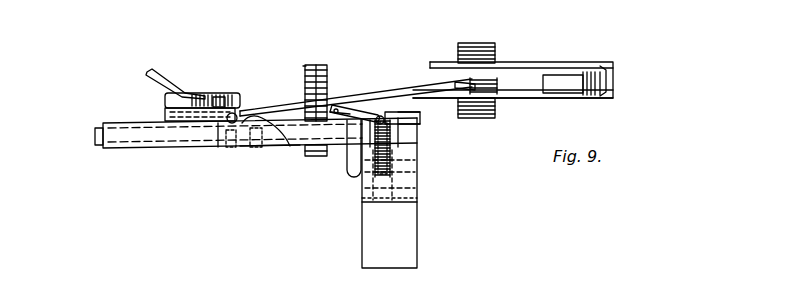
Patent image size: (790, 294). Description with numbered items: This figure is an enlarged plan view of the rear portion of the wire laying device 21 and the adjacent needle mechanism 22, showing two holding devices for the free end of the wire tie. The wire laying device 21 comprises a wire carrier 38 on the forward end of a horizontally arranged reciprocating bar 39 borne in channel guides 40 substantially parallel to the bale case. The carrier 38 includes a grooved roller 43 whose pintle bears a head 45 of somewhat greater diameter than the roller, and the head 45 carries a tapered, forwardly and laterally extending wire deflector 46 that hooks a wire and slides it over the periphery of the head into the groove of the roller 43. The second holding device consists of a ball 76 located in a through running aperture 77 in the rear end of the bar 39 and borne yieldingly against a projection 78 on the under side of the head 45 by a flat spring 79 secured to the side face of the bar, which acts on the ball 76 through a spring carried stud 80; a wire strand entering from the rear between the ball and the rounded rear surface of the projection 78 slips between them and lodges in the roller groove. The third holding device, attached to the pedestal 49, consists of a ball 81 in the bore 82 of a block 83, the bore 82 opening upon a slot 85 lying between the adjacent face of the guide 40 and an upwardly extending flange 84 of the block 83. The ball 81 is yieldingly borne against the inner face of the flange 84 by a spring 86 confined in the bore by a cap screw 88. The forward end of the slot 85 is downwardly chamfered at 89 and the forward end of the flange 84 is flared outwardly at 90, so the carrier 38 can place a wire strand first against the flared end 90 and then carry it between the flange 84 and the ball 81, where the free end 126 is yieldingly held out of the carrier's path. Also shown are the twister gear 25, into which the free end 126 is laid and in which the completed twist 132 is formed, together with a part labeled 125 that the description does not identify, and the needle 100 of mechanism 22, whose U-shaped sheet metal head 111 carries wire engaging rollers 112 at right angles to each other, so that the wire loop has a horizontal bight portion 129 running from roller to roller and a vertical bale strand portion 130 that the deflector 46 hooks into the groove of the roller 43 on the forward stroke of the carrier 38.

The wire laying device 21 is at (272, 157).
The needle mechanism 22 is at (513, 107).
The twister gear 25 is at (320, 65).
The wire carrier 38 is at (194, 93).
The reciprocating bar 39 is at (95, 133).
The channel guides 40 is at (130, 149).
The roller 43 is at (165, 110).
The head 45 is at (220, 96).
The wire deflector 46 is at (147, 72).
The pedestal 49 is at (400, 232).
The ball 76 is at (262, 120).
The through running aperture 77 is at (257, 148).
The projection 78 is at (262, 108).
The flat spring 79 is at (218, 148).
The spring carried stud 80 is at (229, 148).
The ball 81 is at (380, 116).
The bore 82 is at (405, 135).
The block 83 is at (355, 176).
The flange 84 is at (395, 112).
The slot 85 is at (420, 112).
The spring 86 is at (393, 150).
The cap screw 88 is at (398, 168).
The chamfer 89 is at (334, 113).
The flared end 90 is at (350, 108).
The needle 100 is at (602, 79).
The needle head 111 is at (542, 65).
The wire engaging rollers 112 is at (448, 70).
The gear tooth 125 is at (303, 66).
The free end 126 is at (420, 122).
The bight portion 129 is at (466, 83).
The vertical bale strand portion 130 is at (304, 107).
The completed twist 132 is at (333, 157).